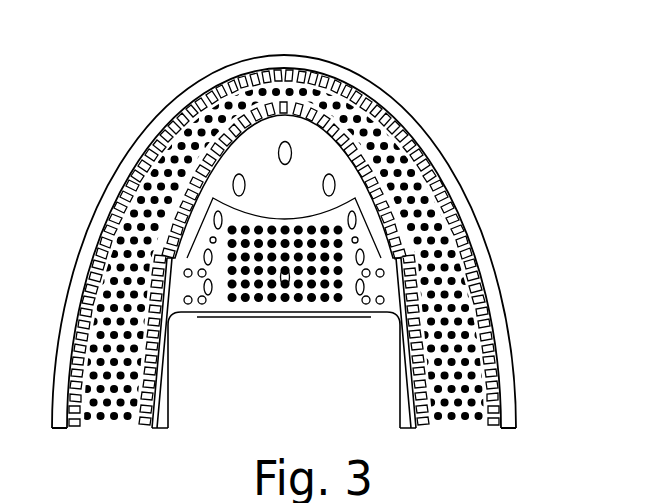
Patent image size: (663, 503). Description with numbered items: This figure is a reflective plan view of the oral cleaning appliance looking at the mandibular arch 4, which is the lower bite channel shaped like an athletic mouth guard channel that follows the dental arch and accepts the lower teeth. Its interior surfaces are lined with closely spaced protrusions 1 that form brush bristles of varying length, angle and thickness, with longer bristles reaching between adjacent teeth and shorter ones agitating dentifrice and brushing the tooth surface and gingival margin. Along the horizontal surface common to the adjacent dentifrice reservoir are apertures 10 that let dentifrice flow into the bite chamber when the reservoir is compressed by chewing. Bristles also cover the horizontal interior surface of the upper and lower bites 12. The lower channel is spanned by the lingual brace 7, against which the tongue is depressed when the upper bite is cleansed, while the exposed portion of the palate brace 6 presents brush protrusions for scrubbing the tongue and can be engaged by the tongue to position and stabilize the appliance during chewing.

The protrusions 1 is at (432, 410).
The mandibular arch 4 is at (155, 167).
The palate brace 6 is at (325, 308).
The lingual brace 7 is at (303, 165).
The apertures 10 is at (392, 127).
The upper and lower bites 12 is at (257, 307).